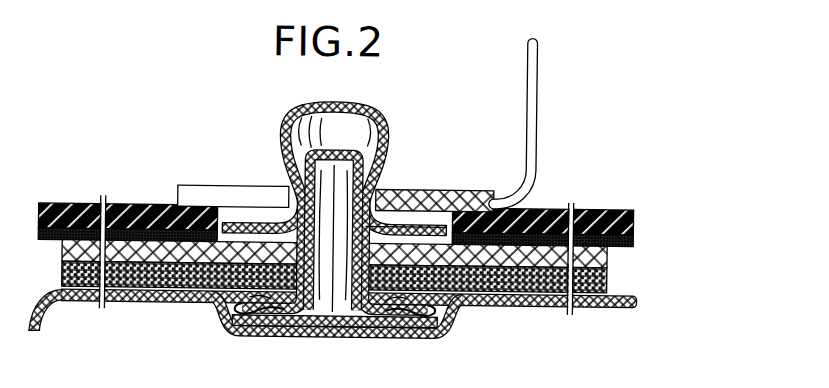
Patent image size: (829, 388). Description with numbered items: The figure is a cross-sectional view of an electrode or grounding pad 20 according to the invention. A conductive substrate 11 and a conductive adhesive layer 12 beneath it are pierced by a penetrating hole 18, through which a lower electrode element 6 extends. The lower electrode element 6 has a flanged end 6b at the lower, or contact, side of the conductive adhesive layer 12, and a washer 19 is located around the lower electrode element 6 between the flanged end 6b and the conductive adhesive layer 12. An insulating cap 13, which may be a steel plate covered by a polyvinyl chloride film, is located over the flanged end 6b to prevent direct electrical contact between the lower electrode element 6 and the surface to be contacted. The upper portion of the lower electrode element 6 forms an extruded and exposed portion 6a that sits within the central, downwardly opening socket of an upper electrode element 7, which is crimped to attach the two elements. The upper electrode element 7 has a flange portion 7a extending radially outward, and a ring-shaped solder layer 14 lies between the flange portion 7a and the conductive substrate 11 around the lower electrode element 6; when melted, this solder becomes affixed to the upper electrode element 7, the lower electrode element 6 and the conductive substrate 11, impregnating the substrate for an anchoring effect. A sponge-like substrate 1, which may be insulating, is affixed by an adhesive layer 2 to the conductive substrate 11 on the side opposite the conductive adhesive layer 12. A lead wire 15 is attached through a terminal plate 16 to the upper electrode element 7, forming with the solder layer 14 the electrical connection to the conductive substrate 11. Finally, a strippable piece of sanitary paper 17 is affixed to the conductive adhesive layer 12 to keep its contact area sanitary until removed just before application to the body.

The sponge-like substrate 1 is at (619, 208).
The adhesive layer 2 is at (634, 238).
The lower electrode element 6 is at (354, 314).
The extruded and exposed portion 6a is at (332, 153).
The flanged end 6b is at (422, 332).
The upper electrode element 7 is at (336, 112).
The flange portion 7a is at (265, 232).
The conductive substrate 11 is at (607, 258).
The conductive adhesive layer 12 is at (604, 280).
The insulating cap 13 is at (238, 326).
The ring-shaped solder layer 14 is at (205, 244).
The lead wire 15 is at (532, 90).
The terminal plate 16 is at (202, 202).
The sanitary paper 17 is at (520, 300).
The penetrating hole 18 is at (331, 276).
The washer 19 is at (378, 312).
The electrode 20 is at (284, 178).